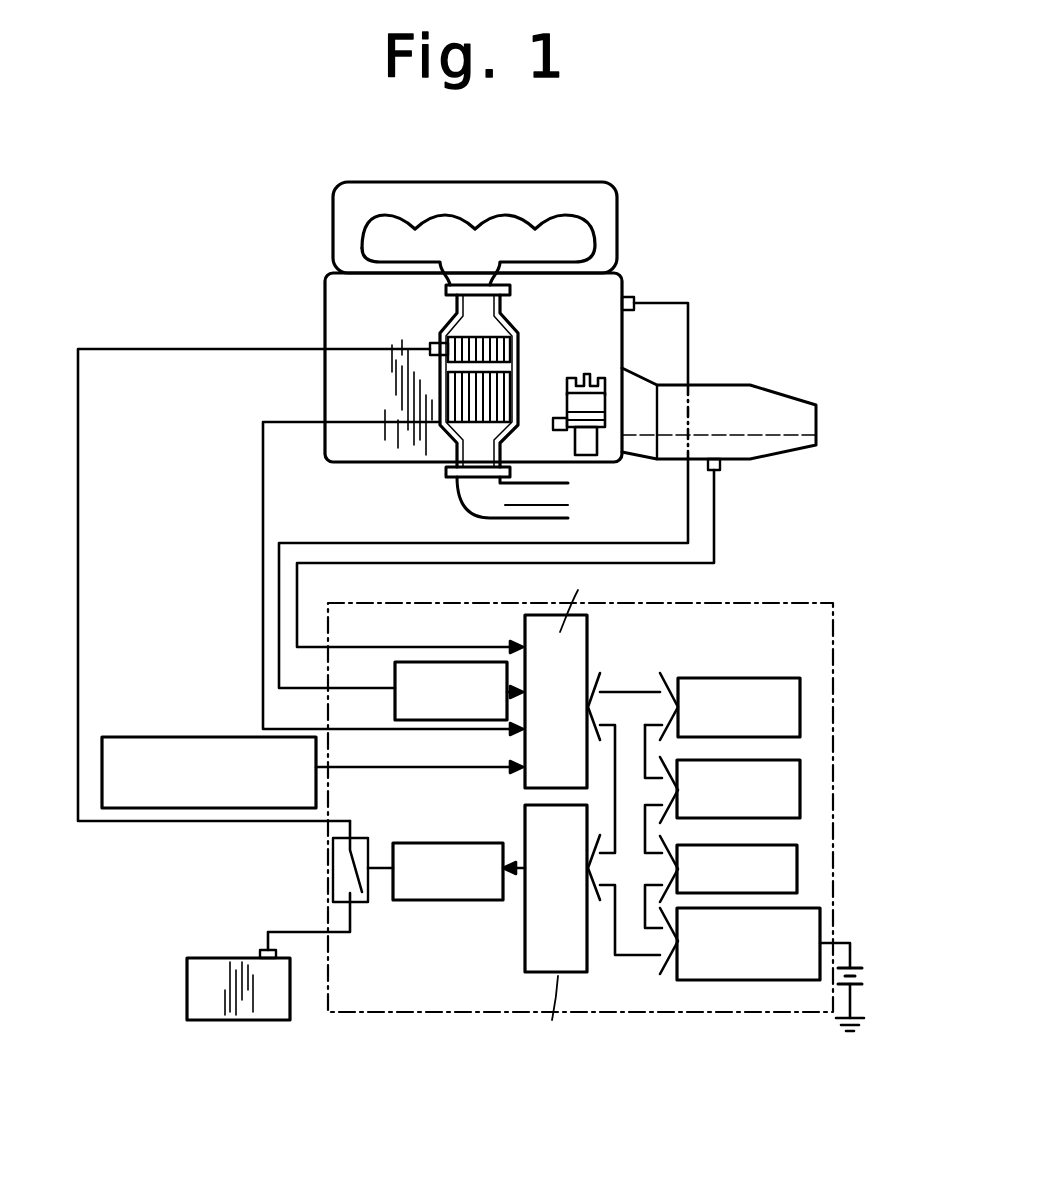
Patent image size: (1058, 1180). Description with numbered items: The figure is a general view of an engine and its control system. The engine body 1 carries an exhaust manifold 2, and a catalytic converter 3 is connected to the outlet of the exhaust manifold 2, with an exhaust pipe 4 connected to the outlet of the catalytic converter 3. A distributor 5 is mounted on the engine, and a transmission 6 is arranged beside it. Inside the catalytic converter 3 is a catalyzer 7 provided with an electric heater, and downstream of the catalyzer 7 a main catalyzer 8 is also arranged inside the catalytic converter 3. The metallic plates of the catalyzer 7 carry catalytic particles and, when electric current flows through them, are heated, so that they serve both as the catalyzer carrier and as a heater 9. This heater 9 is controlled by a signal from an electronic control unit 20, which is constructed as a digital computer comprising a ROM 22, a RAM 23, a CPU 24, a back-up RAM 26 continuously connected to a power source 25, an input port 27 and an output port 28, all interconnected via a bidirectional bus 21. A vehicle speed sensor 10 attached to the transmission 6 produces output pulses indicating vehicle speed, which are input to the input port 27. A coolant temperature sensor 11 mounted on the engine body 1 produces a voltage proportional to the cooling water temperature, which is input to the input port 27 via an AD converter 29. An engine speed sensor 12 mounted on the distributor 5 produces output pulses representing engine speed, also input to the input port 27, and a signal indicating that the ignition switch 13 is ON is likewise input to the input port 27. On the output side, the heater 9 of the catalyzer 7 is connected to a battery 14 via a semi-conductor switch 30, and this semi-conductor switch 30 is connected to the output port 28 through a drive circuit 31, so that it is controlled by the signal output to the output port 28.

The engine body 1 is at (620, 232).
The exhaust manifold 2 is at (528, 240).
The catalytic converter 3 is at (518, 366).
The exhaust pipe 4 is at (462, 497).
The distributor 5 is at (604, 432).
The transmission 6 is at (720, 410).
The catalyzer 7 is at (455, 330).
The main catalyzer 8 is at (498, 393).
The heater 9 is at (500, 332).
The vehicle speed sensor 10 is at (722, 466).
The coolant temperature sensor 11 is at (637, 303).
The engine speed sensor 12 is at (560, 432).
The ignition switch 13 is at (152, 740).
The battery 14 is at (215, 968).
The electronic control unit 20 is at (833, 603).
The bidirectional bus 21 is at (628, 698).
The ROM 22 is at (718, 688).
The RAM 23 is at (800, 790).
The CPU 24 is at (797, 868).
The power source 25 is at (860, 966).
The back-up RAM 26 is at (706, 983).
The input port 27 is at (533, 641).
The output port 28 is at (528, 960).
The AD converter 29 is at (398, 676).
The semi-conductor switch 30 is at (333, 860).
The drive circuit 31 is at (446, 843).